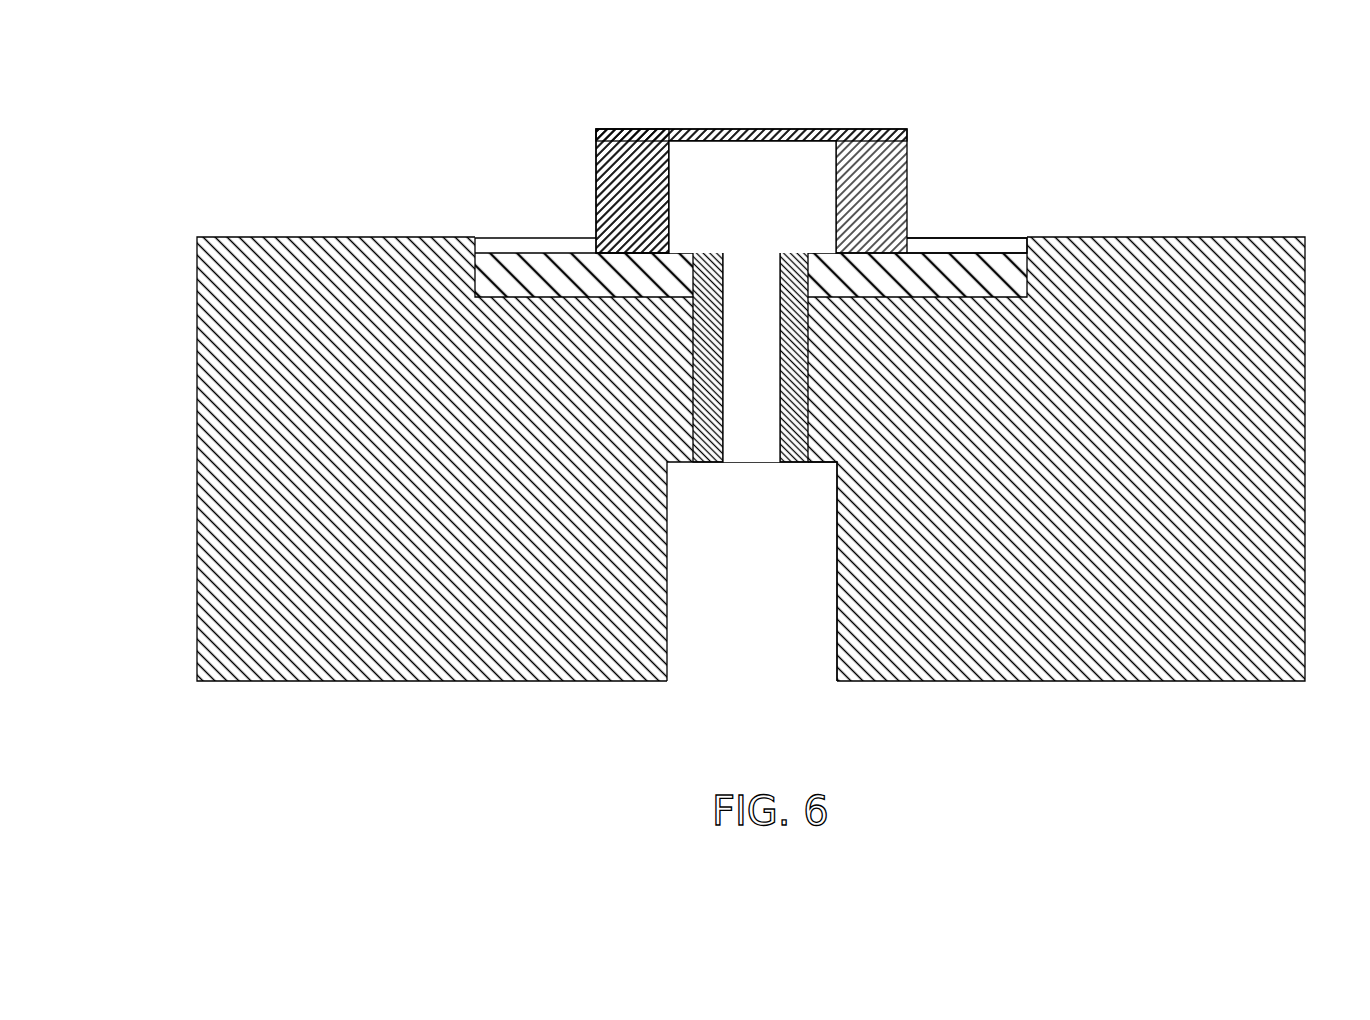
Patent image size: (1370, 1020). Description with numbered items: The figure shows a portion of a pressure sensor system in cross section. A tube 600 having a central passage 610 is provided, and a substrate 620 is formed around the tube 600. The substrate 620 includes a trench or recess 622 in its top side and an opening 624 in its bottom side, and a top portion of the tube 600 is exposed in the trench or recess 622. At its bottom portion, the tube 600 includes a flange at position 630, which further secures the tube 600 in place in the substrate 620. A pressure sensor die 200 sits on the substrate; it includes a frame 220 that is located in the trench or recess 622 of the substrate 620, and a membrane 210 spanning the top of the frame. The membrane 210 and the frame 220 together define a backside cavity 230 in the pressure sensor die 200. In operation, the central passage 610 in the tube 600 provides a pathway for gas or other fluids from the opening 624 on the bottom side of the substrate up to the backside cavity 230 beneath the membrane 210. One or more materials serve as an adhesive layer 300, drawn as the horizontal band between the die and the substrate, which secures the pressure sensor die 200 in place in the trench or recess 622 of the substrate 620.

The pressure sensor die 200 is at (878, 150).
The membrane 210 is at (752, 127).
The frame 220 is at (620, 187).
The backside cavity 230 is at (700, 163).
The adhesive layer 300 is at (520, 275).
The tube 600 is at (712, 433).
The central passage 610 is at (752, 440).
The substrate 620 is at (308, 628).
The trench or recess 622 is at (978, 237).
The opening 624 is at (752, 653).
The flange position 630 is at (838, 462).